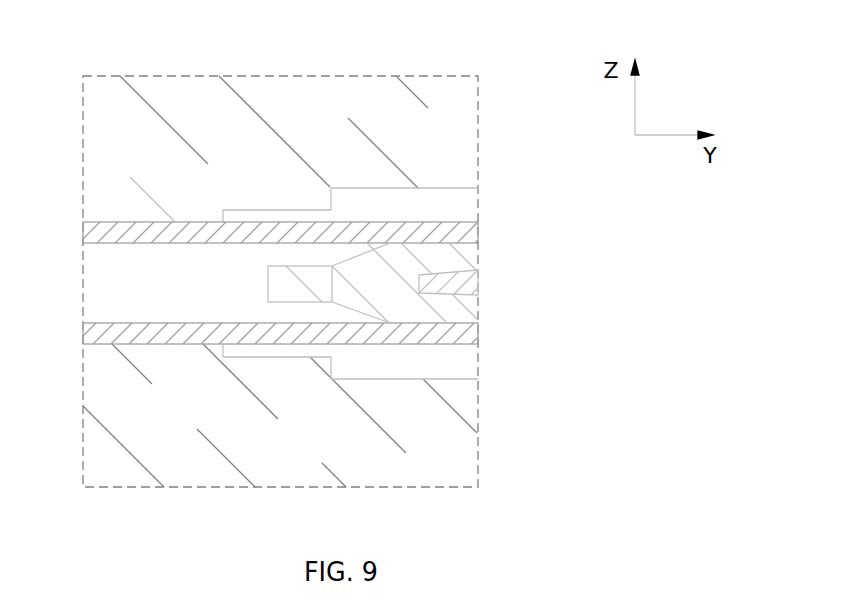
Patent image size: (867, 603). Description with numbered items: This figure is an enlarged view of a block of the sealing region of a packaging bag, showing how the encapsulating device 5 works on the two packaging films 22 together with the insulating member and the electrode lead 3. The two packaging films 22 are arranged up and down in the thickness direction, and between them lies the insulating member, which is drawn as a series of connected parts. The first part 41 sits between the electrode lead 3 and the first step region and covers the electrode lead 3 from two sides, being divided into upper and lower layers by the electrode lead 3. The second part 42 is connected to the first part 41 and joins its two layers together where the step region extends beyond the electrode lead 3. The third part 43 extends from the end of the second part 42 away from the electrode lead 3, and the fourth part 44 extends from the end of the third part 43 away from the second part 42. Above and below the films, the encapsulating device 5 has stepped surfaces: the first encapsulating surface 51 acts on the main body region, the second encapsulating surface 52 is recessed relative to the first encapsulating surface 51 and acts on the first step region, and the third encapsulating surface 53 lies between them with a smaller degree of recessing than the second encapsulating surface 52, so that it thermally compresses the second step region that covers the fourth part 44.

The encapsulating device 5 is at (165, 88).
The first encapsulating surface 51 is at (155, 222).
The third encapsulating surface 53 is at (278, 210).
The second encapsulating surface 52 is at (407, 188).
The packaging film 22 is at (83, 237).
The fourth part 44 is at (276, 288).
The third part 43 is at (365, 260).
The first part 41 is at (467, 255).
The electrode lead 3 is at (475, 285).
The second part 42 is at (408, 283).